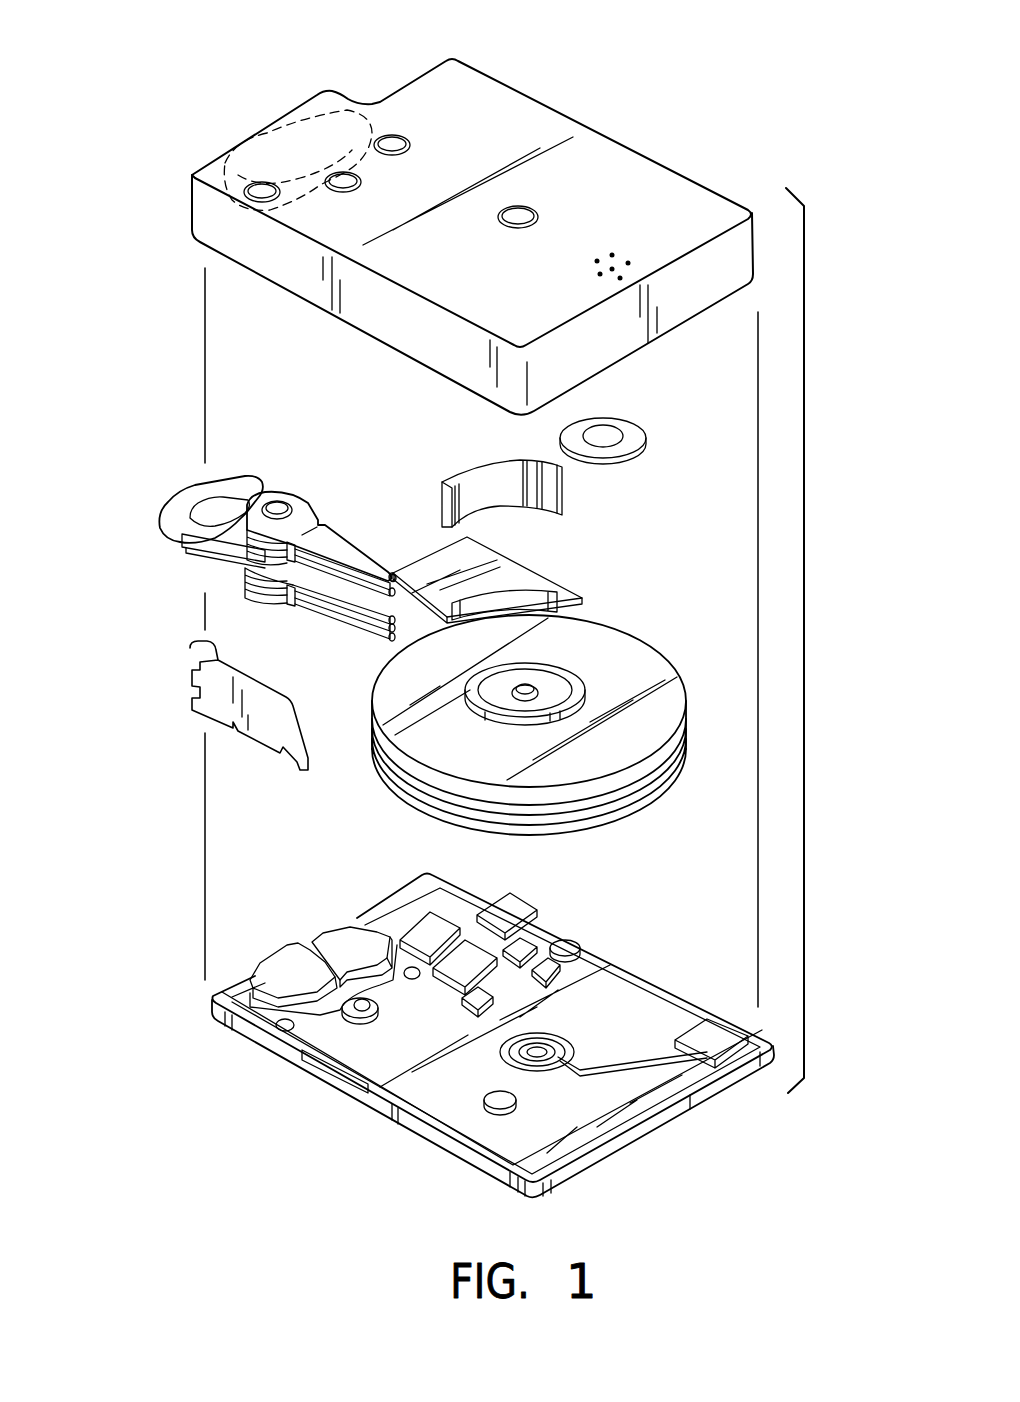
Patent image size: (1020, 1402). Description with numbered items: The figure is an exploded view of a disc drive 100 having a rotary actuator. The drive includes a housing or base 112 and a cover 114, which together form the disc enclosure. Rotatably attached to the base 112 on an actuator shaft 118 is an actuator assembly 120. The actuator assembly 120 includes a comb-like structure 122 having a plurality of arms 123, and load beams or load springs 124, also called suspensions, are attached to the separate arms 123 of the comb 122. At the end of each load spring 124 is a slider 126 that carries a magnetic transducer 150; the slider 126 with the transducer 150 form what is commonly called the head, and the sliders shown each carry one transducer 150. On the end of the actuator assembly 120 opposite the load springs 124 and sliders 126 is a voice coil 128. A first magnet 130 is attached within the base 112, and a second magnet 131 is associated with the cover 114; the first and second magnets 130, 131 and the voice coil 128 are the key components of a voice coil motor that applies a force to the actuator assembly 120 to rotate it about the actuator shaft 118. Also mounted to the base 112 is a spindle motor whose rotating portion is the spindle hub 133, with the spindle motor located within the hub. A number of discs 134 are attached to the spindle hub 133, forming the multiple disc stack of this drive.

The disc drive 100 is at (657, 85).
The base 112 is at (660, 1005).
The cover 114 is at (635, 177).
The actuator shaft 118 is at (279, 500).
The actuator assembly 120 is at (225, 558).
The comb-like structure 122 is at (298, 610).
The arms 123 is at (302, 532).
The load springs 124 is at (343, 547).
The slider 126 is at (390, 572).
The voice coil 128 is at (180, 510).
The first magnet 130 is at (273, 967).
The second magnet 131 is at (307, 117).
The spindle hub 133 is at (537, 687).
The discs 134 is at (653, 667).
The magnetic transducer 150 is at (428, 578).